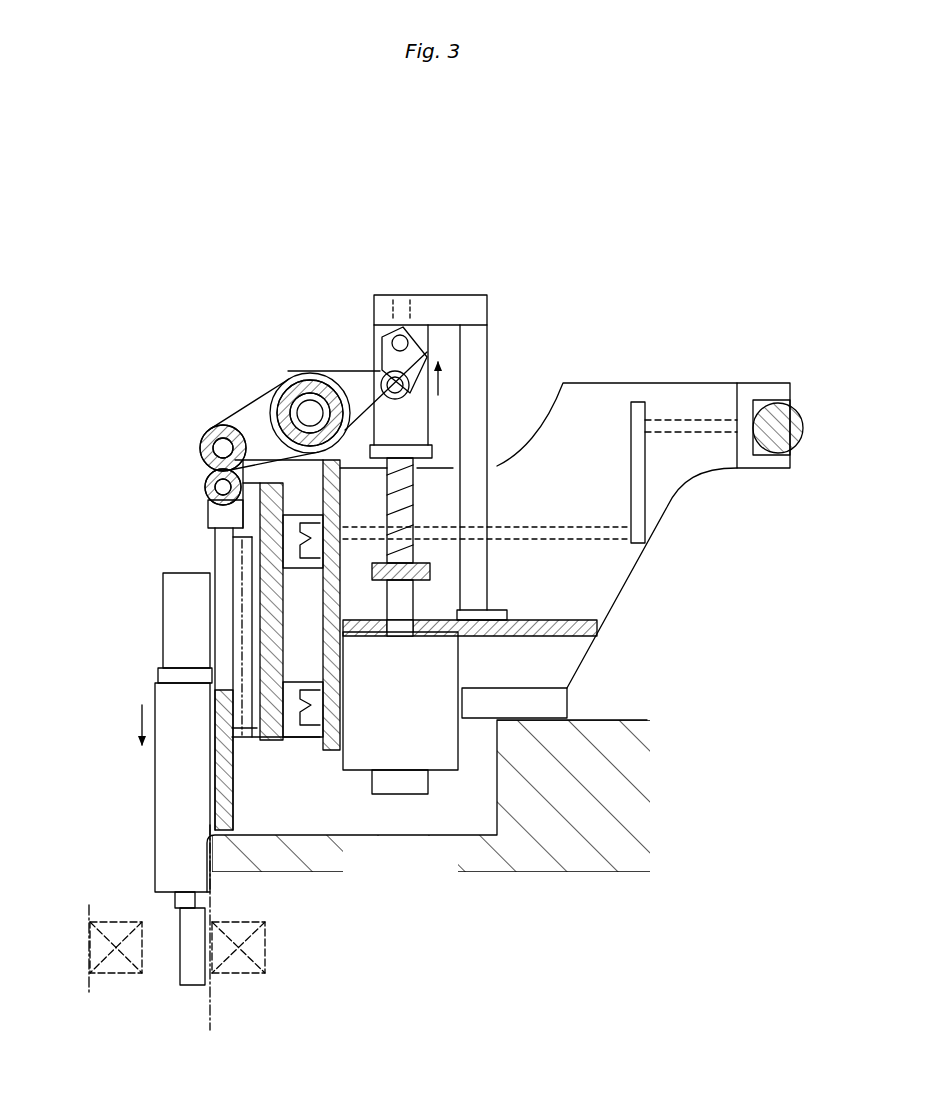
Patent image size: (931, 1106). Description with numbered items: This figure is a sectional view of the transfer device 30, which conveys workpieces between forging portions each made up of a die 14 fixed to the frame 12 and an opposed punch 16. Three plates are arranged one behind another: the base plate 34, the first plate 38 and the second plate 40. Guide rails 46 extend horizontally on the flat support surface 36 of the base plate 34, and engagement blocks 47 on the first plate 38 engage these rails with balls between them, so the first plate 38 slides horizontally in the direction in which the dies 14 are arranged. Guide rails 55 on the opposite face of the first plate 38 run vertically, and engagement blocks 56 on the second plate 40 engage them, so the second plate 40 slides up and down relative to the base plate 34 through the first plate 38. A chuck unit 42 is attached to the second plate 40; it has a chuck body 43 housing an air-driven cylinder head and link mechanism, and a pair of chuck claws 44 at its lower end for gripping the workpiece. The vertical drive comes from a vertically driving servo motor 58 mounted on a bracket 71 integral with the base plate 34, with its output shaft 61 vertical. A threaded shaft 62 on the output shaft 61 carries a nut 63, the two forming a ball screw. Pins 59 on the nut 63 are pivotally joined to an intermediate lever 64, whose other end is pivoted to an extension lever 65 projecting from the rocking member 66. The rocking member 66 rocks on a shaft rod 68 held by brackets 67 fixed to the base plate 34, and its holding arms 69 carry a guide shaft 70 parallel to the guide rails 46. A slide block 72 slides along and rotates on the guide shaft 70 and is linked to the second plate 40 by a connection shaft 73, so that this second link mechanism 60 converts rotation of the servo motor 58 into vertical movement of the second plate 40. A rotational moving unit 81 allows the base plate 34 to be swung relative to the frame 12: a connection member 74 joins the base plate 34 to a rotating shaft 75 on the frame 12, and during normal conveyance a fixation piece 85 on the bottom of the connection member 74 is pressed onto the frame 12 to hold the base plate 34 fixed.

The frame 12 is at (615, 745).
The die 14 is at (238, 968).
The punch 16 is at (112, 968).
The transfer device 30 is at (512, 210).
The base plate 34 is at (336, 752).
The support surface 36 is at (343, 670).
The first plate 38 is at (243, 840).
The second plate 40 is at (230, 842).
The chuck unit 42 is at (152, 770).
The chuck body 43 is at (173, 822).
The chuck claw 44 is at (190, 975).
The guide rail 46 is at (330, 585).
The engagement block 47 is at (284, 575).
The guide rail 55 is at (250, 540).
The engagement block 56 is at (230, 566).
The vertically driving servo motor 58 is at (462, 742).
The pin 59 is at (428, 332).
The second link mechanism 60 is at (257, 300).
The output shaft 61 is at (400, 610).
The shaft 62 is at (413, 490).
The nut 63 is at (410, 405).
The intermediate lever 64 is at (418, 350).
The extension lever 65 is at (360, 387).
The rocking member 66 is at (331, 360).
The bracket 67 is at (292, 463).
The shaft rod 68 is at (297, 373).
The holding arm 69 is at (257, 417).
The guide shaft 70 is at (226, 427).
The bracket 71 is at (590, 630).
The slide block 72 is at (205, 450).
The connection shaft 73 is at (205, 487).
The connection member 74 is at (620, 380).
The rotating shaft 75 is at (800, 445).
The rotational moving unit 81 is at (690, 265).
The fixation piece 85 is at (555, 705).